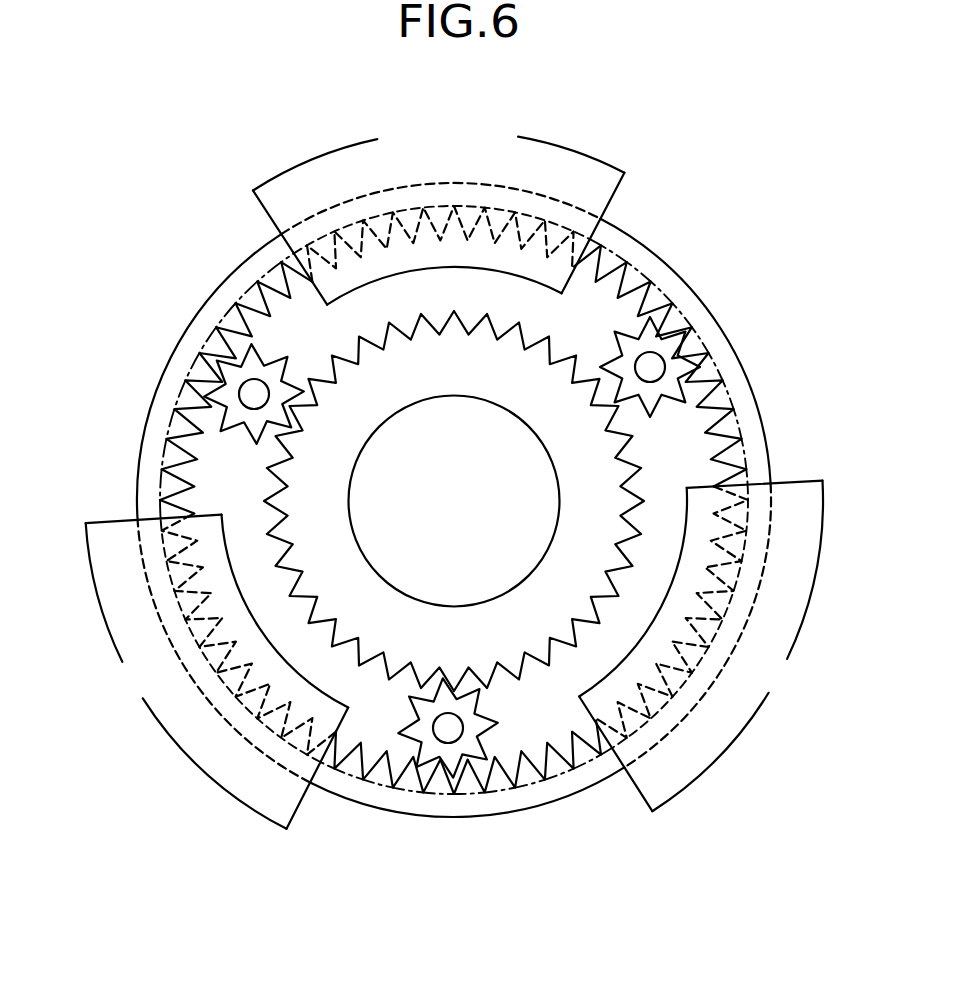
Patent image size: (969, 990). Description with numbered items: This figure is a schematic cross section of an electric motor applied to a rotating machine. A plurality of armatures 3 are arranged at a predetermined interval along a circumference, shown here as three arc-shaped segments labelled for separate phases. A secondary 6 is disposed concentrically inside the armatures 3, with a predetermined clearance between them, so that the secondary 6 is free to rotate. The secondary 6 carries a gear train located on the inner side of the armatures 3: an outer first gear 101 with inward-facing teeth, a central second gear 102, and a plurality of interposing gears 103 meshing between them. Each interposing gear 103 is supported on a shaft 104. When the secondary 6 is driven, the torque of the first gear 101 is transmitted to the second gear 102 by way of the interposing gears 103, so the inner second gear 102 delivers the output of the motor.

The armature 3 is at (601, 156).
The secondary 6 is at (666, 262).
The first gear 101 is at (730, 435).
The second gear 102 is at (640, 467).
The interposing gear 103 is at (677, 402).
The shaft 104 is at (652, 366).